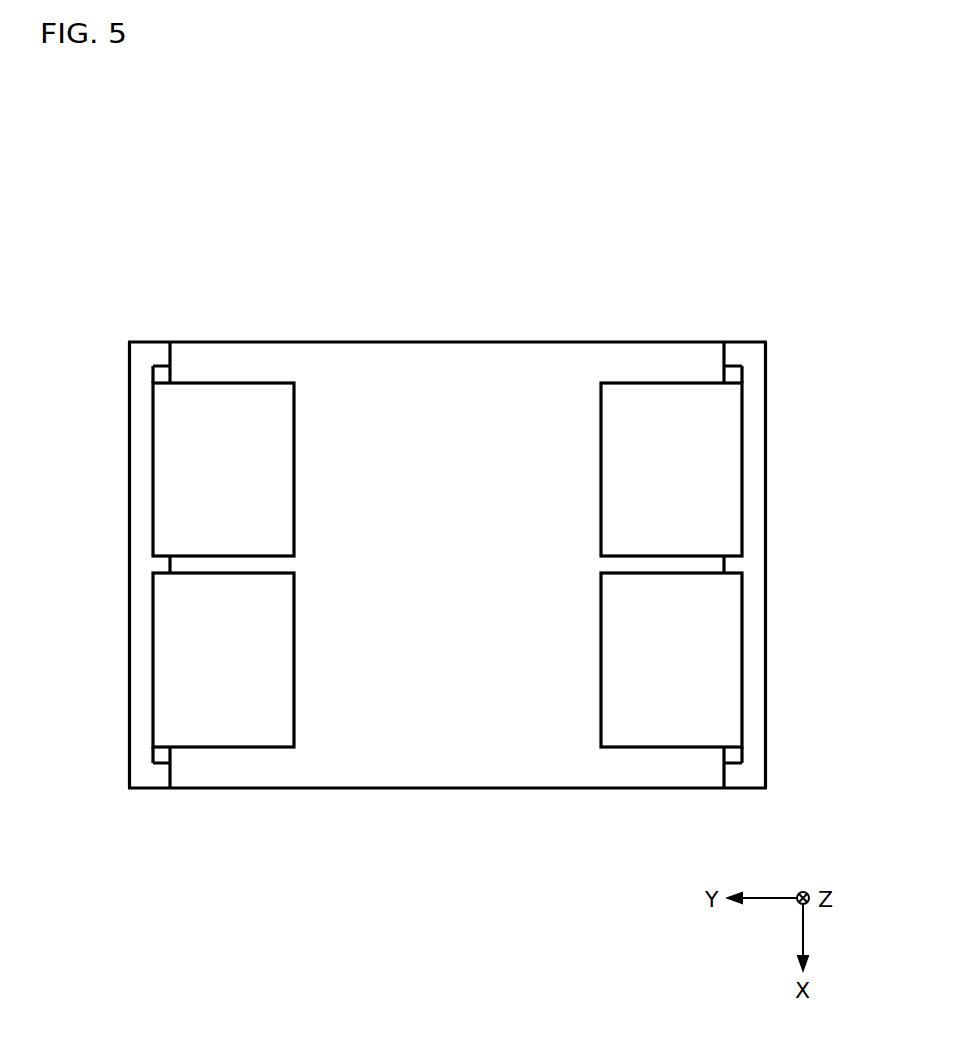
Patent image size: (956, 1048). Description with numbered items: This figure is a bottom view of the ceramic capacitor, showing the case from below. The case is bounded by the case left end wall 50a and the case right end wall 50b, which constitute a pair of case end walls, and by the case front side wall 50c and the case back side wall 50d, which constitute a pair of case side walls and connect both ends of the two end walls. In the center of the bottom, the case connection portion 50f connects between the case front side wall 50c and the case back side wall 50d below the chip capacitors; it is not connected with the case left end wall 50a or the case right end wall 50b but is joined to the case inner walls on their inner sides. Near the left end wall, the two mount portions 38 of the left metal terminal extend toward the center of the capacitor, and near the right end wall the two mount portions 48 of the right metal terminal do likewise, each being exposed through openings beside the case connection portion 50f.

The case left end wall 50a is at (130, 438).
The case right end wall 50b is at (752, 408).
The case front side wall 50c is at (420, 341).
The case back side wall 50d is at (452, 789).
The case connection portion 50f is at (458, 580).
The mount portion 38 is at (196, 503).
The mount portion 48 is at (700, 503).